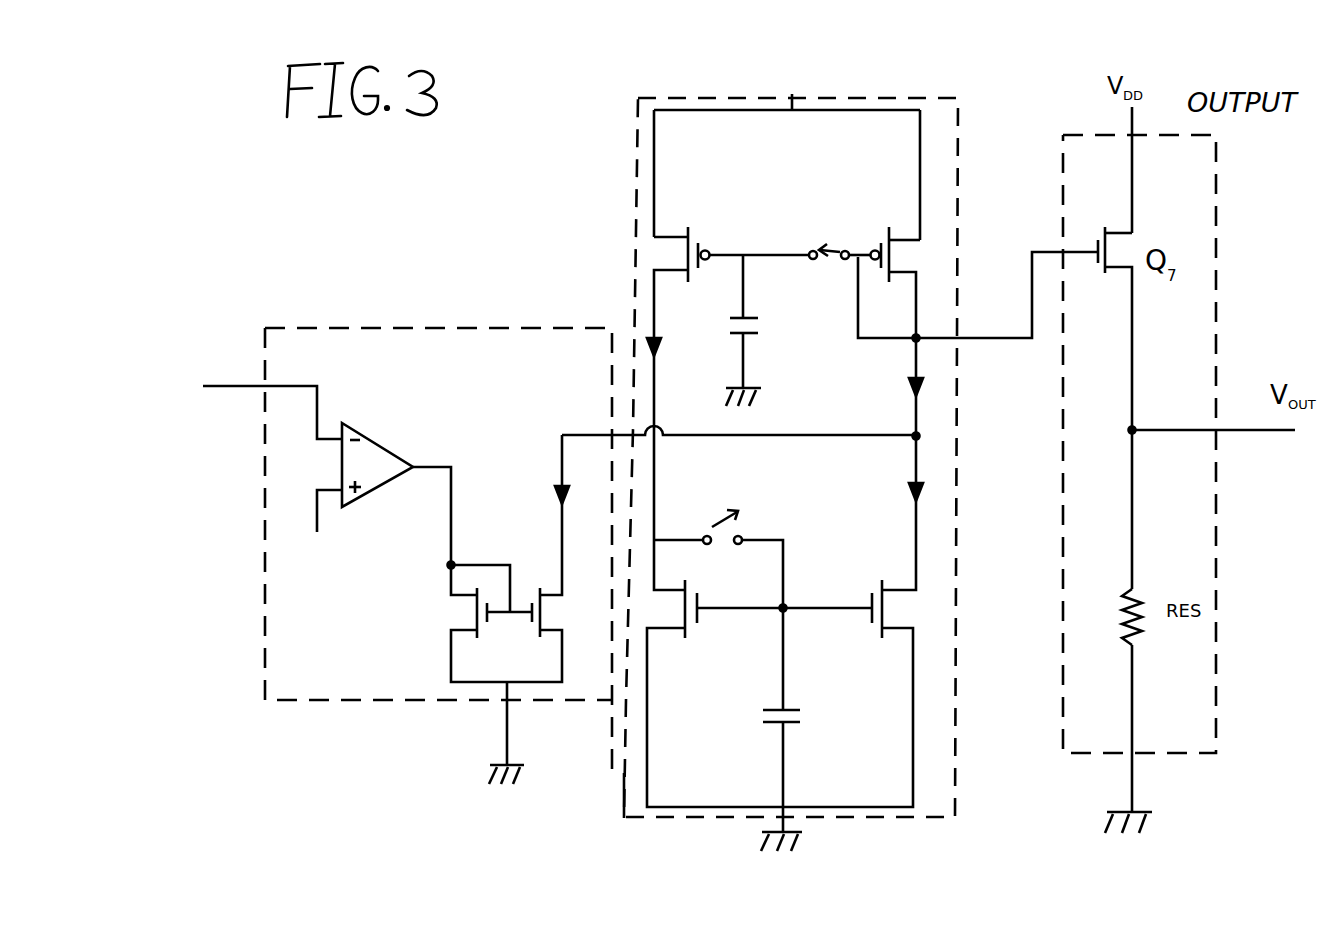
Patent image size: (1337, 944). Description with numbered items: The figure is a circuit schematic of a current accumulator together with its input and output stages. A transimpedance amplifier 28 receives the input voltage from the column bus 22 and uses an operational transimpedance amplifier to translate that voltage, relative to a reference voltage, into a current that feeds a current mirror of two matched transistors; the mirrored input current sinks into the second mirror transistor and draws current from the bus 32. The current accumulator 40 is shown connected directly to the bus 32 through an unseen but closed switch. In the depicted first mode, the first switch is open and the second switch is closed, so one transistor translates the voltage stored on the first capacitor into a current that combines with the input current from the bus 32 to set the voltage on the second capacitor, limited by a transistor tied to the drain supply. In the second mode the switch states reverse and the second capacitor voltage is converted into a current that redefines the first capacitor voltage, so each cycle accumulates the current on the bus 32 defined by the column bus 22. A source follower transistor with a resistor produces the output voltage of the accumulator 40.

The column bus 22 is at (232, 392).
The transimpedance amplifier 28 is at (479, 326).
The bus 32 is at (592, 432).
The current accumulator 40 is at (683, 97).